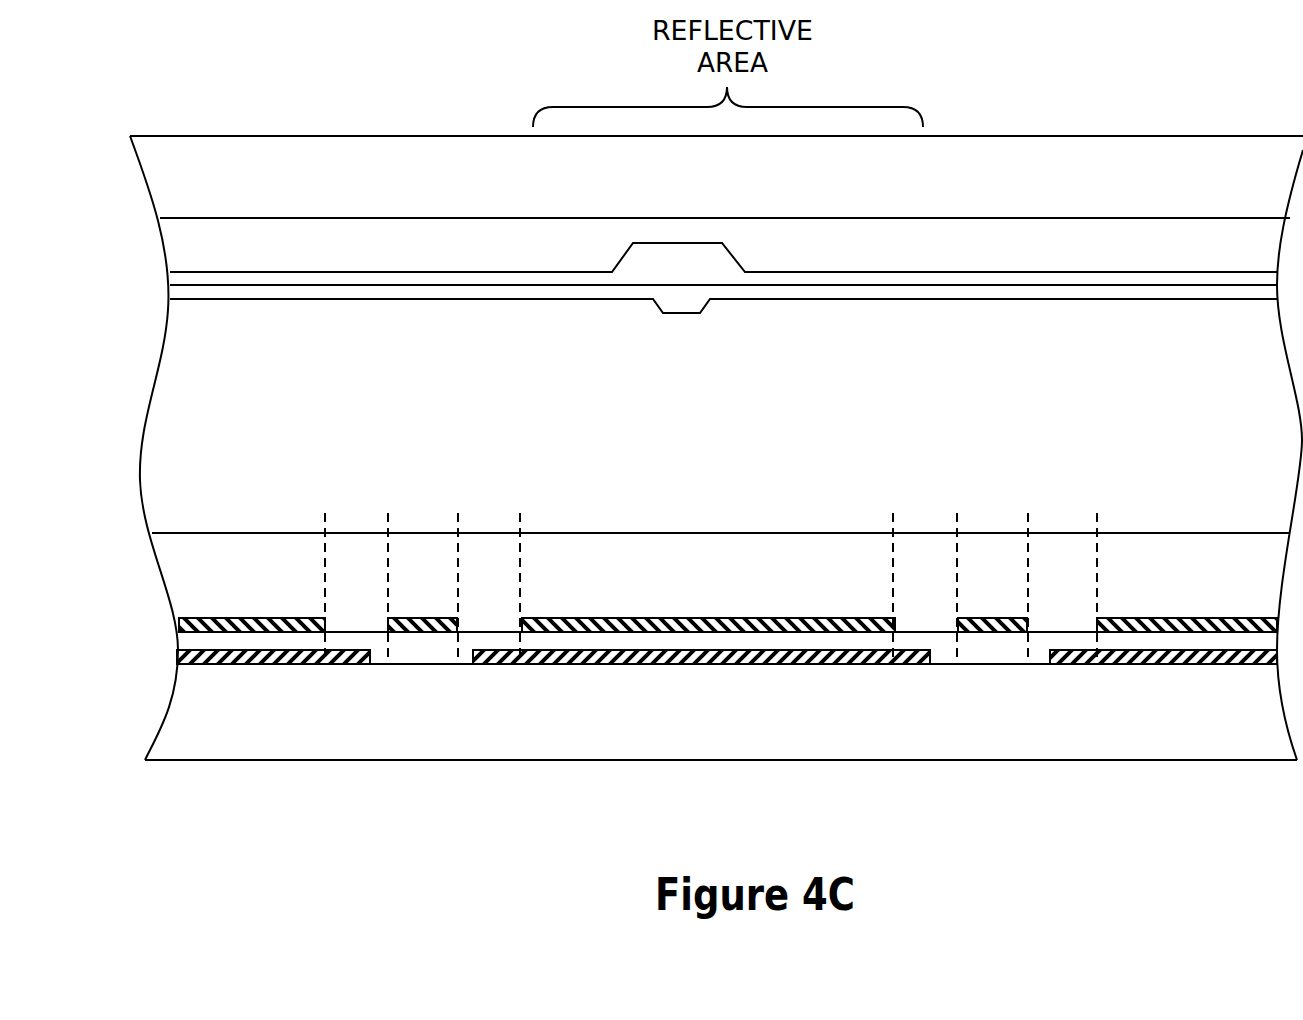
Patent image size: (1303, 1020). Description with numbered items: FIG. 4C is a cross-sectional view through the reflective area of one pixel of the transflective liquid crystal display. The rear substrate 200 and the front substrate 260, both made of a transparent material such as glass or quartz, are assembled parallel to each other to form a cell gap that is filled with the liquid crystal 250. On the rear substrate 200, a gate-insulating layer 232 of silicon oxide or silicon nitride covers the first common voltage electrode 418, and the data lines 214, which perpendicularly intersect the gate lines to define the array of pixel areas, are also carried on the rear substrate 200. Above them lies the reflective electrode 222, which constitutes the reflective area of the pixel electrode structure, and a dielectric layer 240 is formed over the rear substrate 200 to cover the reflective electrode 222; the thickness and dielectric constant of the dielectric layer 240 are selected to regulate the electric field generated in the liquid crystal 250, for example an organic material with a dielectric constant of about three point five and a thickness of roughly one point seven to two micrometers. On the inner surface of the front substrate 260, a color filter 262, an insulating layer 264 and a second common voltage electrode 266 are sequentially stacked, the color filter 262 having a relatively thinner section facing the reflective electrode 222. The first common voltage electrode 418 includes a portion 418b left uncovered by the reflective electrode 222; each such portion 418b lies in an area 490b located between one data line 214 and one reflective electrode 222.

The rear substrate 200 is at (172, 706).
The data line 214 is at (410, 632).
The reflective electrode 222 is at (217, 618).
The gate-insulating layer 232 is at (183, 641).
The dielectric layer 240 is at (170, 563).
The liquid crystal 250 is at (152, 389).
The front substrate 260 is at (157, 169).
The color filter 262 is at (172, 239).
The insulating layer 264 is at (170, 276).
The second common voltage electrode 266 is at (177, 294).
The first common voltage electrode 418 is at (214, 664).
The portion of first common voltage electrode 418b is at (491, 664).
The area between data line and reflective electrode 490b is at (388, 510).